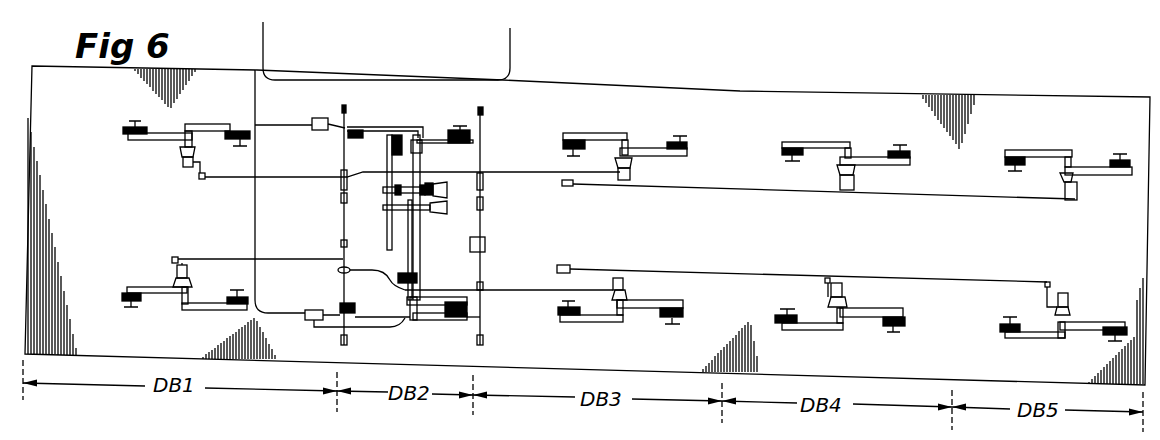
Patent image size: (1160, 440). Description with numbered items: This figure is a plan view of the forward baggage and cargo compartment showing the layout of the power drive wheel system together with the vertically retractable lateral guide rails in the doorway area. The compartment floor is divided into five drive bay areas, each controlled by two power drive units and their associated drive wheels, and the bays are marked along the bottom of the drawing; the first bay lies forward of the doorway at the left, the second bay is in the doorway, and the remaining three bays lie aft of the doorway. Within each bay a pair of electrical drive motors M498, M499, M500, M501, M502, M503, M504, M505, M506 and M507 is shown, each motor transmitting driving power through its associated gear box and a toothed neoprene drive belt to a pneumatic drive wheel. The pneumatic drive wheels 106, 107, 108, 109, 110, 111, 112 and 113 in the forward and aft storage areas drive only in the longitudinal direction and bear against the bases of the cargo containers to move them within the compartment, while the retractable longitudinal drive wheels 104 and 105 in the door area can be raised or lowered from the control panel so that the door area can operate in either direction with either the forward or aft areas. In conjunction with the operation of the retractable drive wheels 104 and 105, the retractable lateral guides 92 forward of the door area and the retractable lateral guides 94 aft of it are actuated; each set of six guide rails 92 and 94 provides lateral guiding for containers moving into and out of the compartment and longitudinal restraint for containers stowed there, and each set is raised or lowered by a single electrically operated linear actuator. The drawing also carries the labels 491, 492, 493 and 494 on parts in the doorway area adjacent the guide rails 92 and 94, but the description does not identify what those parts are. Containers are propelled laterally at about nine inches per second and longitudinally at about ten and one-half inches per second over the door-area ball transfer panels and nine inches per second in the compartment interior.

The retractable lateral guide rails 92 is at (343, 182).
The retractable lateral guide rails 94 is at (483, 113).
The retractable longitudinal drive wheel 104 is at (357, 130).
The retractable longitudinal drive wheel 105 is at (468, 317).
The pneumatic drive wheel 106 is at (565, 146).
The pneumatic drive wheel 107 is at (563, 315).
The pneumatic drive wheel 108 is at (782, 152).
The pneumatic drive wheel 109 is at (780, 317).
The pneumatic drive wheel 110 is at (1005, 160).
The pneumatic drive wheel 111 is at (1000, 327).
The pneumatic drive wheel 112 is at (143, 126).
The pneumatic drive wheel 113 is at (122, 300).
The bar assembly 491 is at (398, 297).
The connector box 492 is at (305, 313).
The connector box 493 is at (312, 131).
The block 494 is at (470, 253).
The electrical drive motor M498 is at (181, 156).
The electrical drive motor M499 is at (190, 277).
The electrical drive motor M500 is at (427, 183).
The electrical drive motor M501 is at (437, 214).
The electrical drive motor M502 is at (633, 164).
The electrical drive motor M503 is at (625, 295).
The electrical drive motor M504 is at (840, 180).
The electrical drive motor M505 is at (847, 301).
The electrical drive motor M506 is at (1064, 187).
The electrical drive motor M507 is at (1070, 307).